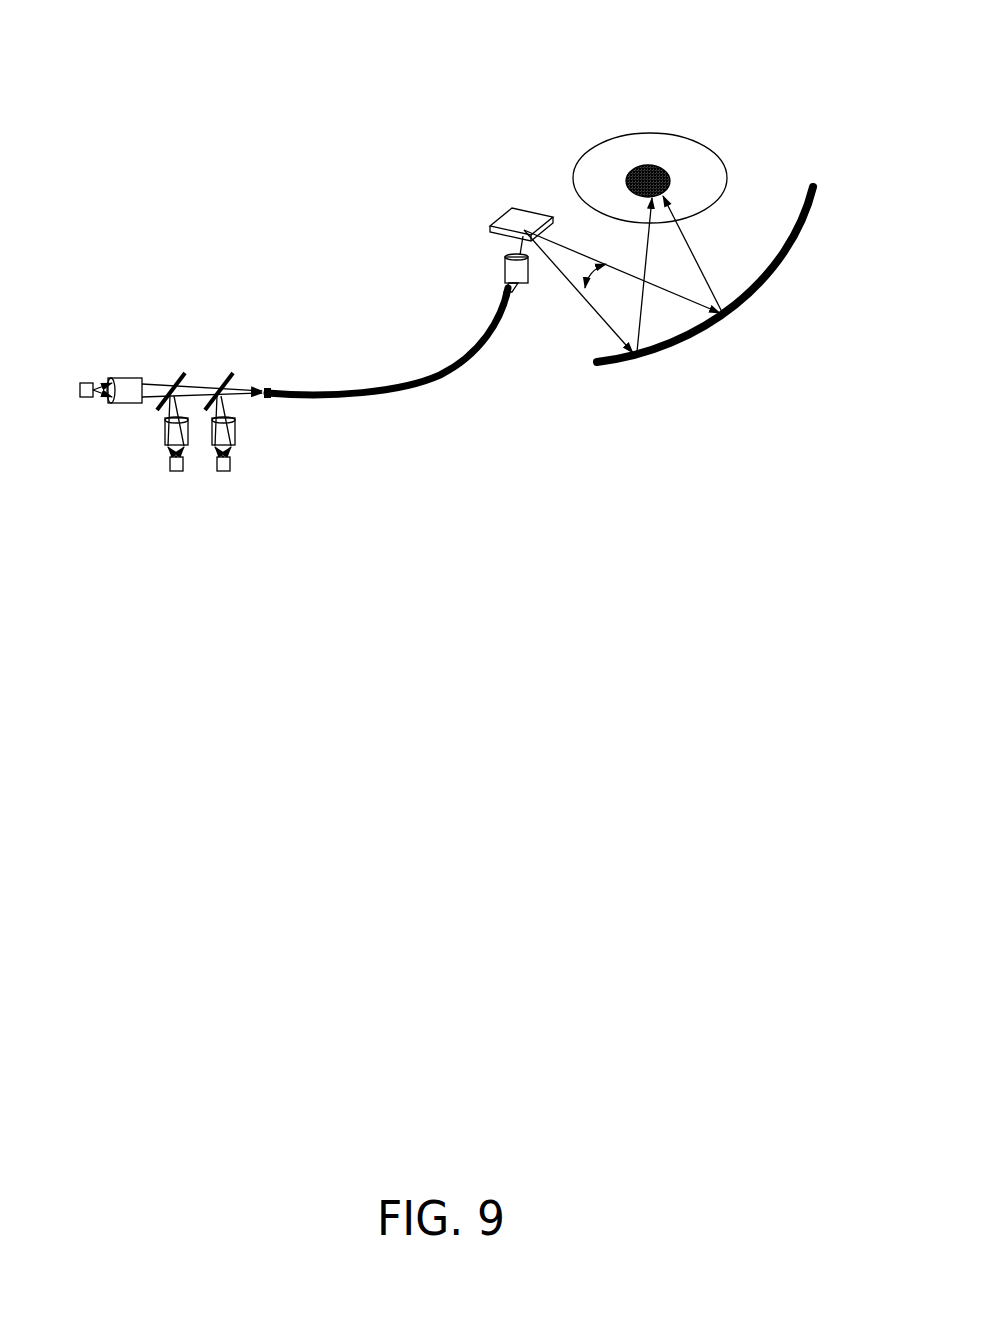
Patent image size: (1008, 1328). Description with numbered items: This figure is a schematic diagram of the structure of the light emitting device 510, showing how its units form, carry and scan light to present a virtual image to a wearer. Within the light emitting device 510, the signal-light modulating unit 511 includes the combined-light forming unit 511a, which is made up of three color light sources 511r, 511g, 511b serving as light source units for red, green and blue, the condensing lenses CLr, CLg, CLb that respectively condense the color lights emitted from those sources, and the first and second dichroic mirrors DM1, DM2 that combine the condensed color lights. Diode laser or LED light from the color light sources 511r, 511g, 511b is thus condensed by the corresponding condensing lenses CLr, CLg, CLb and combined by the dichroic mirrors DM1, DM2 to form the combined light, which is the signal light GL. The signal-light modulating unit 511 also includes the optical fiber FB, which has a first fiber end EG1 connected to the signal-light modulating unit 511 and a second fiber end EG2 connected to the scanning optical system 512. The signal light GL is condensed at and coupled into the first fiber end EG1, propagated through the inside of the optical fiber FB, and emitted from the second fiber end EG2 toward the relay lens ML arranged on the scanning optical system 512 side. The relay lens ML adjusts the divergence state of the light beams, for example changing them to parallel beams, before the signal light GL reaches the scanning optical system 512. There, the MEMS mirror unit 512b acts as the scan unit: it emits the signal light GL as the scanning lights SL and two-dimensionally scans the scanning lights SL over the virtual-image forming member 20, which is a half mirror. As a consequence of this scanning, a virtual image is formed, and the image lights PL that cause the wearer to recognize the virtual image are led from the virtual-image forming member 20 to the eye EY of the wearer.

The light emitting device 510 is at (360, 150).
The signal-light modulating unit 511 is at (313, 452).
The combined-light forming unit 511a is at (145, 452).
The color light source 511r is at (88, 382).
The color light source 511g is at (175, 473).
The color light source 511b is at (222, 473).
The condensing lens CLr is at (132, 378).
The condensing lens CLg is at (165, 432).
The condensing lens CLb is at (233, 432).
The first dichroic mirror DM1 is at (173, 380).
The second dichroic mirror DM2 is at (217, 380).
The signal light GL is at (245, 388).
The first fiber end EG1 is at (268, 390).
The optical fiber FB is at (370, 390).
The second fiber end EG2 is at (503, 289).
The relay lens ML is at (505, 268).
The scanning optical system 512 is at (478, 210).
The MEMS mirror unit 512b is at (526, 211).
The scanning lights SL is at (633, 263).
The virtual-image forming member 20 is at (743, 305).
The image lights PL is at (648, 230).
The eye EY is at (610, 167).